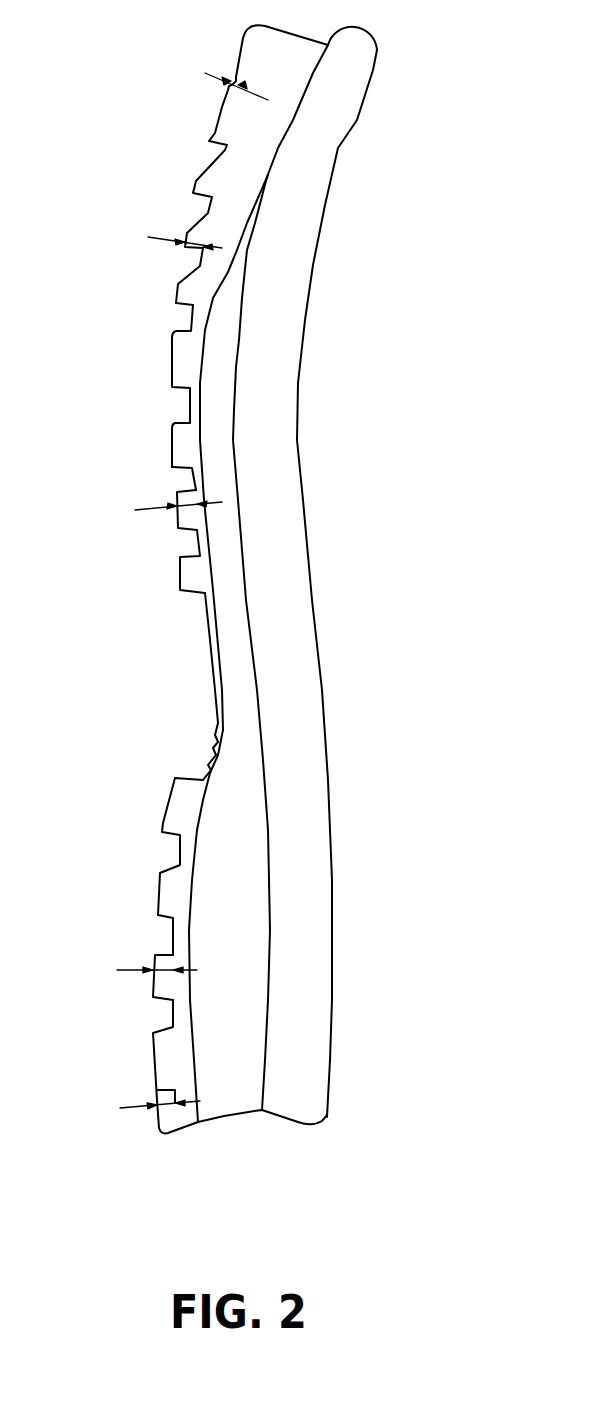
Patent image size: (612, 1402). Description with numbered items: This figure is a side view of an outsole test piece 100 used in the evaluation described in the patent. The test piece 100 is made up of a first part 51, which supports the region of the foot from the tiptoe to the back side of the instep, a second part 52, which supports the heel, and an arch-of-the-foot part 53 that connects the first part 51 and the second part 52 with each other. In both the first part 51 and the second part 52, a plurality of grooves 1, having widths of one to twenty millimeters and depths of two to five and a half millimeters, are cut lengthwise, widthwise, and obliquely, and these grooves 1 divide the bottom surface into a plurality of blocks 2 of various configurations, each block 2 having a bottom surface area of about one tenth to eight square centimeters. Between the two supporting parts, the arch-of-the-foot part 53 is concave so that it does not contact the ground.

The test piece 100 is at (433, 1042).
The first part 51 is at (168, 270).
The second part 52 is at (197, 750).
The arch-of-the-foot part 53 is at (142, 997).
The groove 1 is at (192, 472).
The block 2 is at (182, 532).